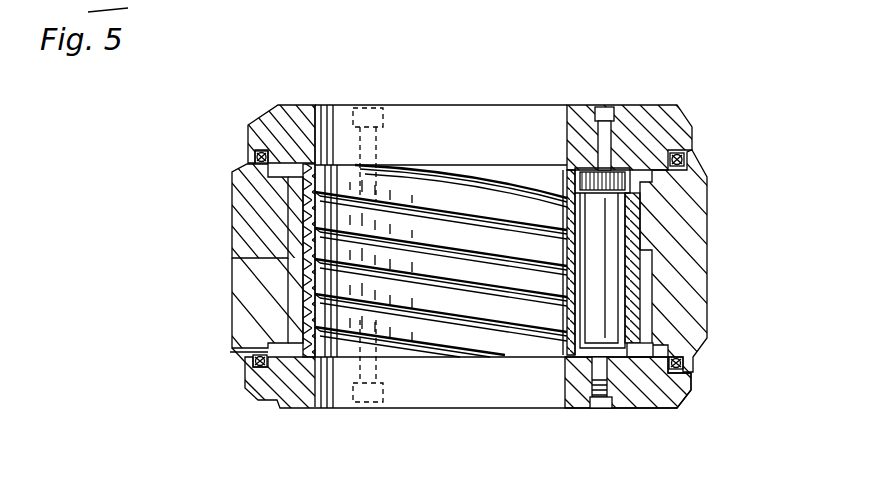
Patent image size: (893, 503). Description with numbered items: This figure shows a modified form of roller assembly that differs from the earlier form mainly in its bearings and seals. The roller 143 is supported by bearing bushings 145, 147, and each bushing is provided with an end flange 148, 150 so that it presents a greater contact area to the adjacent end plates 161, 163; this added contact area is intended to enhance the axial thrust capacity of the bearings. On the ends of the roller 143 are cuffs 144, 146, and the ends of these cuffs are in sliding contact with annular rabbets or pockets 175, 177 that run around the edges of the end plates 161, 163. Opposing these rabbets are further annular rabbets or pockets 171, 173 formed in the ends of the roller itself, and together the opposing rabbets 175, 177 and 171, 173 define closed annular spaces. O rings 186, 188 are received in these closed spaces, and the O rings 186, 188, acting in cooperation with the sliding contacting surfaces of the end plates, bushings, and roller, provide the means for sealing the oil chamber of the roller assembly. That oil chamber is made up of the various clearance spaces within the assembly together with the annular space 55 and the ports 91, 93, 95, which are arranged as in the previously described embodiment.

The annular space 55 is at (288, 266).
The port 91 is at (652, 262).
The port 93 is at (590, 280).
The port 95 is at (597, 365).
The roller 143 is at (698, 313).
The cuff 144 is at (703, 170).
The bearing bushing 145 is at (288, 208).
The cuff 146 is at (688, 366).
The bearing bushing 147 is at (280, 298).
The end flange 148 is at (245, 180).
The end flange 150 is at (283, 338).
The end plate 161 is at (297, 104).
The end plate 163 is at (291, 408).
The annular rabbet 171 is at (690, 180).
The annular rabbet 173 is at (684, 345).
The annular rabbet 175 is at (688, 152).
The annular rabbet 177 is at (693, 383).
The O ring 186 is at (256, 158).
The O ring 188 is at (253, 356).